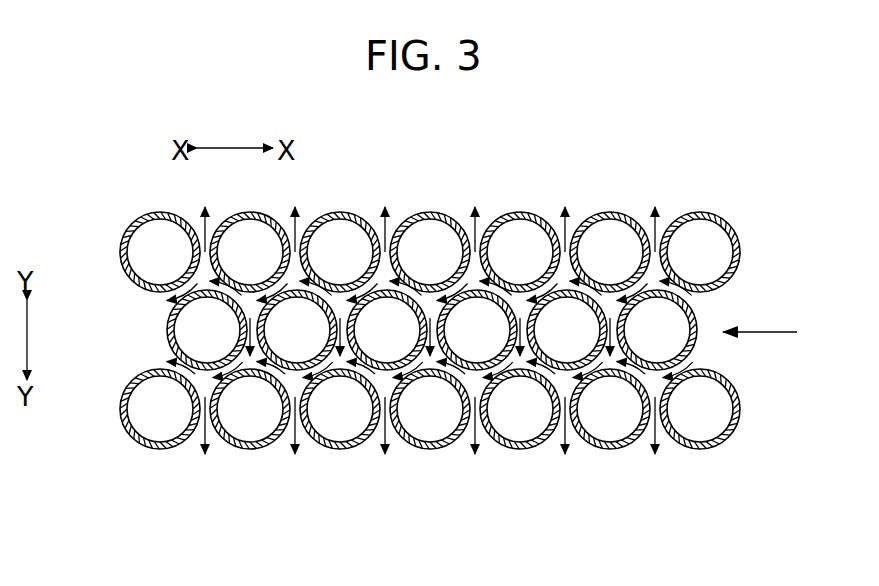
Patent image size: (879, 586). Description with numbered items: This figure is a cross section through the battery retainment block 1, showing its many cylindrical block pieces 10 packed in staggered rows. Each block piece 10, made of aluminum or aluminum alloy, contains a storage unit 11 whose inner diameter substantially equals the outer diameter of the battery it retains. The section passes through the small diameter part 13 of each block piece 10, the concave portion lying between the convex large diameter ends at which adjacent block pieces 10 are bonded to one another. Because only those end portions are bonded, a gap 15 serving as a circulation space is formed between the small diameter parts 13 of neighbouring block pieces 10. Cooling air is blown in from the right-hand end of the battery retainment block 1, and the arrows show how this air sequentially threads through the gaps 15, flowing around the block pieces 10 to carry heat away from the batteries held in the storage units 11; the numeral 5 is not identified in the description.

The battery retainment block 1 is at (766, 148).
The air flow 5 is at (690, 297).
The block piece 10 is at (430, 353).
The storage unit 11 is at (160, 232).
The small diameter part 13 is at (126, 270).
The gap 15 is at (325, 290).